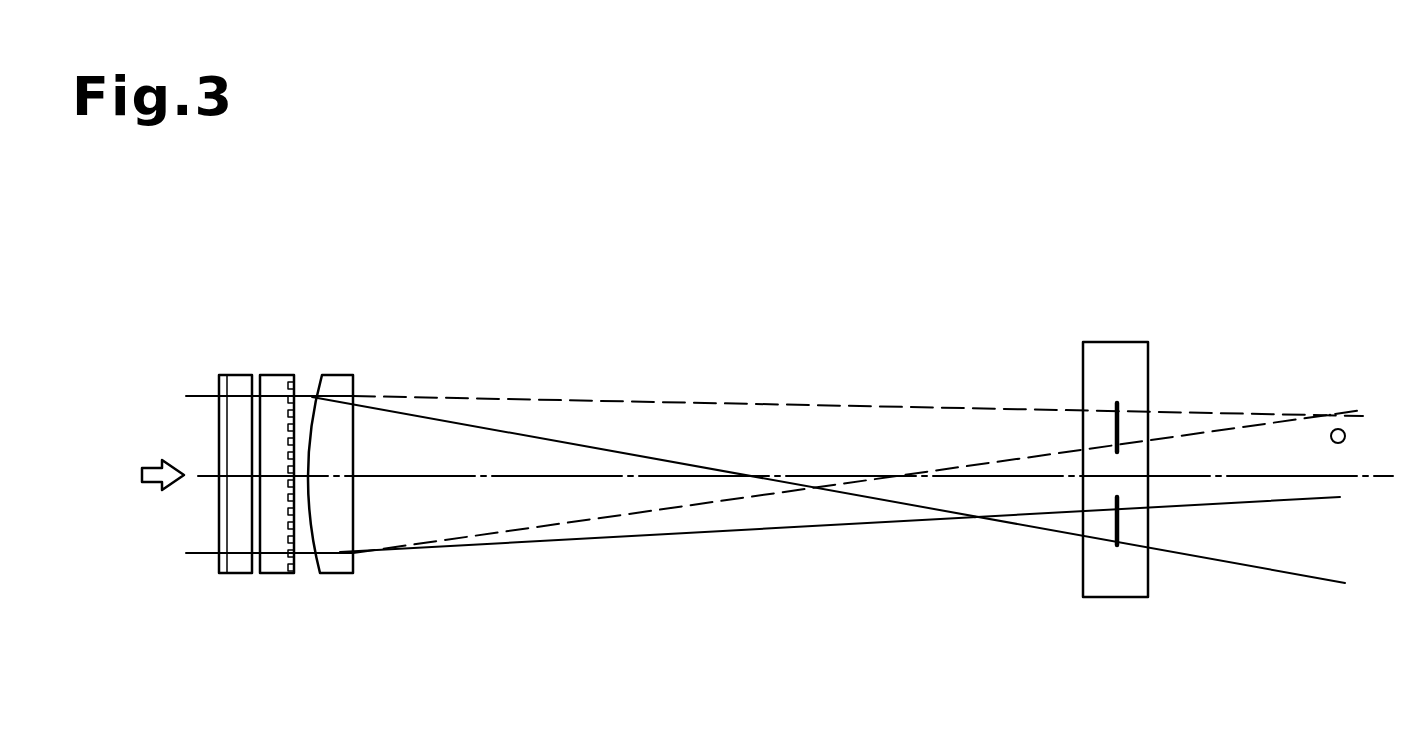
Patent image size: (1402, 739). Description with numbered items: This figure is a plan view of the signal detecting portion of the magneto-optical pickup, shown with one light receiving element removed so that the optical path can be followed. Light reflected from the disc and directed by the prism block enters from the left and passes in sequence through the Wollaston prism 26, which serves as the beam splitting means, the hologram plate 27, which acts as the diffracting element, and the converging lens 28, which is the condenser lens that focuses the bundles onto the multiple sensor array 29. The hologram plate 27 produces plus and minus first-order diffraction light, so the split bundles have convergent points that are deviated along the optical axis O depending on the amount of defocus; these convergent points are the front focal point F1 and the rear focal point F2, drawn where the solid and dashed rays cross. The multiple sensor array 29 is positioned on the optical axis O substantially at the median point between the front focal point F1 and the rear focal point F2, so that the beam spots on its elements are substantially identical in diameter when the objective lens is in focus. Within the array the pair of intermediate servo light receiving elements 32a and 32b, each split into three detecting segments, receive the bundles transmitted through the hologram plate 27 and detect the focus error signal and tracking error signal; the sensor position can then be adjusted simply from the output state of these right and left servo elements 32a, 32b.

The Wollaston prism 26 is at (237, 373).
The hologram plate 27 is at (276, 373).
The converging lens 28 is at (332, 373).
The multiple sensor array 29 is at (1105, 338).
The servo light receiving element 32a is at (1118, 398).
The servo light receiving element 32b is at (1116, 540).
The front focal point F1 is at (972, 520).
The rear focal point F2 is at (1329, 412).
The optical axis O is at (1356, 474).